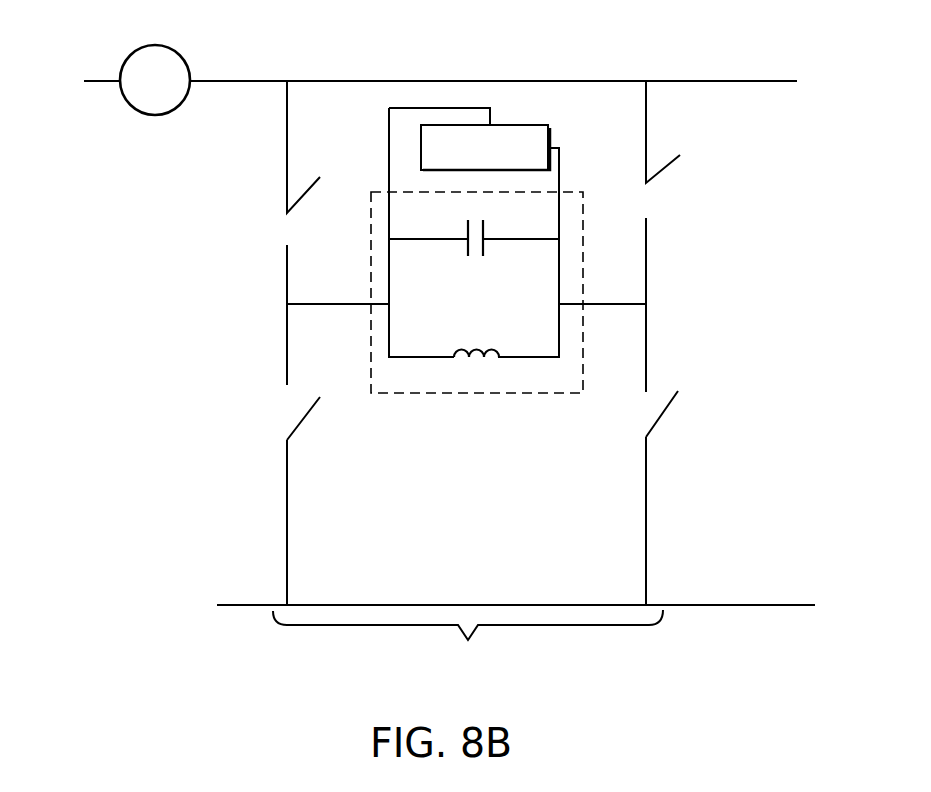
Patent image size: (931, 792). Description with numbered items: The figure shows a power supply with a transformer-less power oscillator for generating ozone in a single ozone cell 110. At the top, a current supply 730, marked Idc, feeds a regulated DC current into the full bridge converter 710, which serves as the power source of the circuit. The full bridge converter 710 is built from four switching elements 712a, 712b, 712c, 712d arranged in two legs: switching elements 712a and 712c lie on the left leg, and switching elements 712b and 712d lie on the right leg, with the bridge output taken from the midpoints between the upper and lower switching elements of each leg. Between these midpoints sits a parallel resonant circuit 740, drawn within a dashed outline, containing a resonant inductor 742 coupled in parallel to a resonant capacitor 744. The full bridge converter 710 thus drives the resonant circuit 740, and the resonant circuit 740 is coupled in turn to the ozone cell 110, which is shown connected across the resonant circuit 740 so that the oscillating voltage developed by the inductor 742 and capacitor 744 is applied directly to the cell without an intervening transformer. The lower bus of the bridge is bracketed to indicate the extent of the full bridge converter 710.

The current supply 730 is at (142, 47).
The ozone cell 110 is at (529, 122).
The parallel resonant circuit 740 is at (501, 295).
The resonant capacitor 744 is at (478, 258).
The resonant inductor 742 is at (474, 359).
The switching element 712a is at (280, 228).
The switching element 712b is at (647, 201).
The switching element 712c is at (290, 414).
The switching element 712d is at (645, 411).
The full bridge converter 710 is at (468, 639).